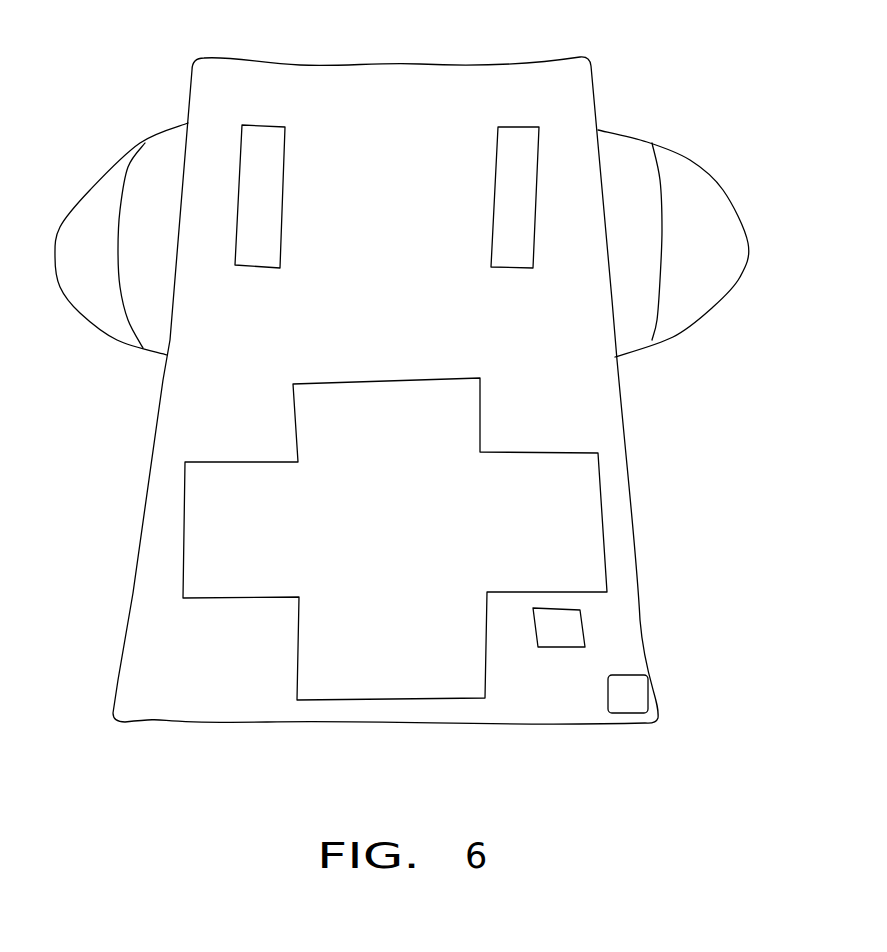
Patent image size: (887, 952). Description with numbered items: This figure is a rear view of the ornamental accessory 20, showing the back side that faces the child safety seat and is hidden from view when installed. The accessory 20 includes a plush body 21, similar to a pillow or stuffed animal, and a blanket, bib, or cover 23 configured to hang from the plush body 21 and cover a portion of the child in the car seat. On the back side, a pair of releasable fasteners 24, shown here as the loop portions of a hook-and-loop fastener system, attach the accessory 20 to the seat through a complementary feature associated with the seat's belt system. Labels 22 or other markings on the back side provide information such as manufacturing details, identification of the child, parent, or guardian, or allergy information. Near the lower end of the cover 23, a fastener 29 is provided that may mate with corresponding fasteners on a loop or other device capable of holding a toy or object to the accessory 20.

The accessory 20 is at (401, 390).
The plush body 21 is at (92, 300).
The labels 22 is at (316, 669).
The cover 23 is at (578, 390).
The releasable fasteners 24 is at (513, 155).
The fasteners 29 is at (627, 697).